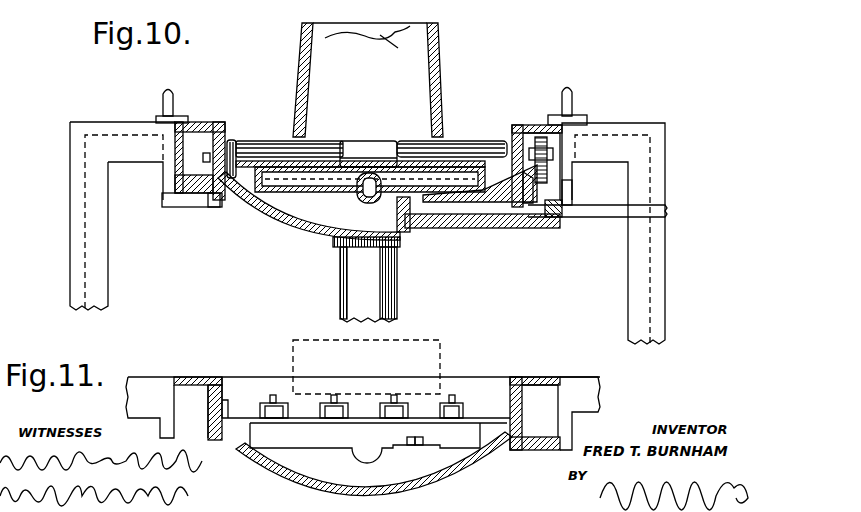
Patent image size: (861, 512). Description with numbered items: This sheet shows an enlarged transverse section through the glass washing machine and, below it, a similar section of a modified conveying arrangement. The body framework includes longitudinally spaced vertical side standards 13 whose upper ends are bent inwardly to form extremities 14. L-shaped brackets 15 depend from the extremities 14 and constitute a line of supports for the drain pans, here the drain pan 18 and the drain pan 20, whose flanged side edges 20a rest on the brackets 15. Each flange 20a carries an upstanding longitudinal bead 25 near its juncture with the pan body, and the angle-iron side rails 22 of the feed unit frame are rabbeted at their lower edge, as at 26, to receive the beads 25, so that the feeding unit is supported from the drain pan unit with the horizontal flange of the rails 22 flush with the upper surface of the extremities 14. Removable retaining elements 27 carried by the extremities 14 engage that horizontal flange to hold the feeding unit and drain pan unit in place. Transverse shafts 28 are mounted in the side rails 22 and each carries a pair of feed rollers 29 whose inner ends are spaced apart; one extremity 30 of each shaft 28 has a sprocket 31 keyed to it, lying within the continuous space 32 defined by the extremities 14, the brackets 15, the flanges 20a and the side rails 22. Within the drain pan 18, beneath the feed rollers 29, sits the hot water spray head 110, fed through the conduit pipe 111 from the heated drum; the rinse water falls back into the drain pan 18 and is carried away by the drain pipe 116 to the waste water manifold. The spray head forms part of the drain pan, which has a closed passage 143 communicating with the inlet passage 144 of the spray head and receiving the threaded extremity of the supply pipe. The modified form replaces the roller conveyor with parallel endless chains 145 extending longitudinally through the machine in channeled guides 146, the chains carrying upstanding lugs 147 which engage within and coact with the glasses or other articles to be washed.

In FIG. 10, the vertical side standard 13 is at (100, 253).
In FIG. 10, the inwardly bent extremity 14 is at (112, 147).
In FIG. 10, the L-shaped bracket 15 is at (197, 200).
In FIG. 10, the drain pan 18 is at (309, 230).
In FIG. 10, the drain pan 20 is at (553, 218).
In FIG. 10, the flanged side edge 20a is at (176, 192).
In FIG. 10, the side rail 22 is at (203, 123).
In FIG. 10, the upstanding longitudinal bead 25 is at (210, 194).
In FIG. 10, the rabbet 26 is at (227, 143).
In FIG. 10, the removable retaining element 27 is at (157, 117).
In FIG. 10, the shaft 28 is at (365, 163).
In FIG. 10, the feed roller 29 is at (262, 150).
In FIG. 10, the shaft extremity 30 is at (535, 137).
In FIG. 10, the sprocket 31 is at (548, 140).
In FIG. 10, the continuous space 32 is at (537, 204).
In FIG. 10, the hot water spray head 110 is at (313, 165).
In FIG. 10, the conduit pipe 111 is at (610, 212).
In FIG. 10, the drain pipe 116 is at (397, 285).
In FIG. 10, the closed passage 143 is at (462, 210).
In FIG. 10, the inlet passage 144 is at (428, 165).
In FIG. 11, the endless chain 145 is at (267, 403).
In FIG. 11, the channeled guide 146 is at (260, 408).
In FIG. 11, the upstanding lug 147 is at (274, 403).